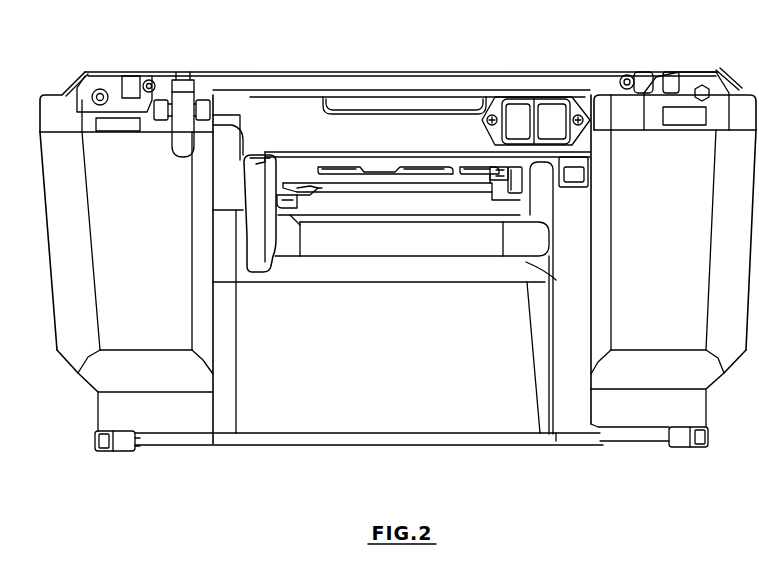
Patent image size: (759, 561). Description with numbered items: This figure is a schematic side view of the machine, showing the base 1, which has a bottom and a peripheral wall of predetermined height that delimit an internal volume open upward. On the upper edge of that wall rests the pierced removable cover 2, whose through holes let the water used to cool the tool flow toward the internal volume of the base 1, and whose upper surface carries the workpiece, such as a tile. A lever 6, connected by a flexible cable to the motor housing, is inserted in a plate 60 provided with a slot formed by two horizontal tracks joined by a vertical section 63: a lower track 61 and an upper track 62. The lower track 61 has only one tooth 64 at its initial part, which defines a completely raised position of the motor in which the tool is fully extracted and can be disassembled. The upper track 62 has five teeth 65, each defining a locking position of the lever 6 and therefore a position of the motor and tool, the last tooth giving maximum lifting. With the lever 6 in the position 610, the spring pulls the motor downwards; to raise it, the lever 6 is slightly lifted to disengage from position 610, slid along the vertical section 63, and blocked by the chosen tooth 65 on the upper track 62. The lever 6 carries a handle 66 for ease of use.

The base 1 is at (627, 452).
The pierced removable cover 2 is at (216, 70).
The lever 6 is at (293, 198).
The plate 60 is at (285, 160).
The lower track 61 is at (458, 187).
The upper track 62 is at (438, 167).
The vertical section 63 is at (506, 180).
The tooth 64 is at (310, 192).
The teeth 65 is at (381, 167).
The handle 66 is at (256, 208).
The position 610 is at (508, 188).